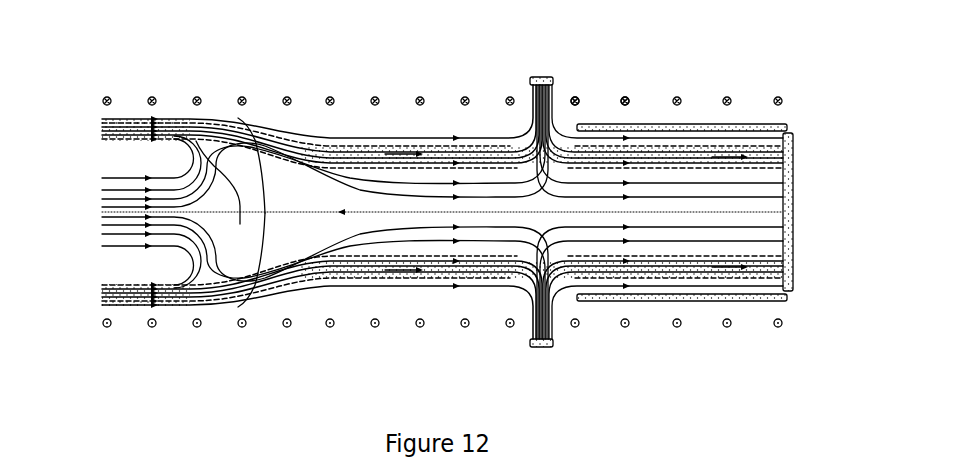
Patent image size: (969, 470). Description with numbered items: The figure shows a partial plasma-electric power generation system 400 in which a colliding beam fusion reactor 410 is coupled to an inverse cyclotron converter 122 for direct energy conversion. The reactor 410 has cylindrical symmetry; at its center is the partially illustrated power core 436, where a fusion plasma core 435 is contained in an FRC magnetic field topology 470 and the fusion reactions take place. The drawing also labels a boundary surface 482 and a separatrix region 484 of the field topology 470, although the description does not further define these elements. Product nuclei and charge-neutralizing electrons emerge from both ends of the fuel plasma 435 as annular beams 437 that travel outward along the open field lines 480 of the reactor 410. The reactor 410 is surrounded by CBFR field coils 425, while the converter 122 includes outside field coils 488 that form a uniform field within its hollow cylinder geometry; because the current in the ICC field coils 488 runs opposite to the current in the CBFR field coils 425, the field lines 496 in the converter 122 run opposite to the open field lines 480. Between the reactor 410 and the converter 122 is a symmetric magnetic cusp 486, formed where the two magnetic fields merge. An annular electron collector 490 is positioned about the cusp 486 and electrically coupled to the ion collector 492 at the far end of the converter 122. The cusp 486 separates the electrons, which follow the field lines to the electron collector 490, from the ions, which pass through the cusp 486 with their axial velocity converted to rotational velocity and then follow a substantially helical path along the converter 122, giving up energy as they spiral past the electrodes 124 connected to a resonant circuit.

The plasma-electric power generation system 400 is at (407, 66).
The FRC magnetic field topology 470 is at (98, 180).
The power core 436 is at (95, 303).
The fusion plasma core 435 is at (170, 148).
The colliding beam fusion reactor 410 is at (216, 105).
The outer closed flux surface 482 is at (224, 194).
The separatrix 484 is at (282, 141).
The open field lines 480 is at (338, 177).
The annular beams 437 is at (414, 268).
The CBFR field coils 425 is at (374, 328).
The ICC field coils 488 is at (625, 96).
The electron collector 490 is at (572, 40).
The magnetic cusp 486 is at (522, 297).
The field lines 496 is at (698, 182).
The electrodes 124 is at (652, 123).
The inverse cyclotron converter 122 is at (751, 311).
The ion collector 492 is at (813, 92).